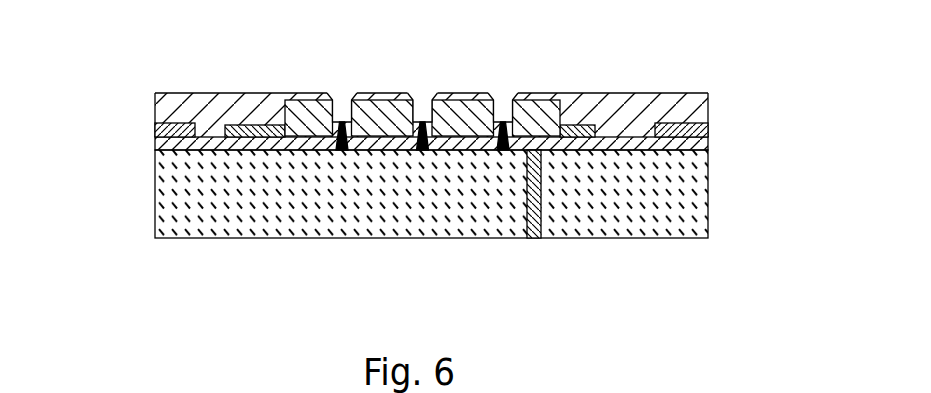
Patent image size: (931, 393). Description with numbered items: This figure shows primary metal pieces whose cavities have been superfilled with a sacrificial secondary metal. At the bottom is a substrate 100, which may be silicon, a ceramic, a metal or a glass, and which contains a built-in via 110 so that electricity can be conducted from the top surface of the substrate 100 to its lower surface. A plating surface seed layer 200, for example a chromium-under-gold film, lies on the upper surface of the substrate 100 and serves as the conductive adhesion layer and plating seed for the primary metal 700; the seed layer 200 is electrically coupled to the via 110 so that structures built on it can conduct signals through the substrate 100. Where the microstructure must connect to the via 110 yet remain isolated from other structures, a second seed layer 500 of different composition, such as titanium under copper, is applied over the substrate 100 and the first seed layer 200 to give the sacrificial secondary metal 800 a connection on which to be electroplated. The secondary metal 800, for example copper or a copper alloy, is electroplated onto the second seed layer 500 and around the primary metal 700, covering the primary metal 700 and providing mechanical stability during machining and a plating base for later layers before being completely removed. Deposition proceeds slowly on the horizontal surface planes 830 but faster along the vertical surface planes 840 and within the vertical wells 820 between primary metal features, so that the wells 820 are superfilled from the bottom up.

The substrate 100 is at (158, 220).
The via 110 is at (534, 222).
The plating surface seed layer 200 is at (155, 142).
The second seed layer 500 is at (255, 122).
The primary metal 700 is at (298, 98).
The sacrificial secondary metal 800 is at (710, 105).
The vertical well 820 is at (503, 151).
The horizontal surface plane 830 is at (546, 108).
The vertical surface plane 840 is at (502, 120).